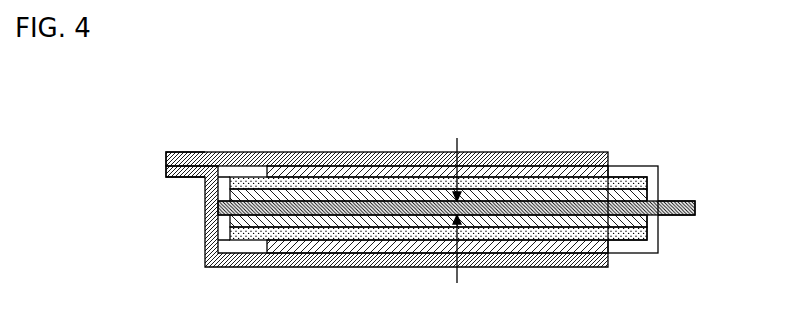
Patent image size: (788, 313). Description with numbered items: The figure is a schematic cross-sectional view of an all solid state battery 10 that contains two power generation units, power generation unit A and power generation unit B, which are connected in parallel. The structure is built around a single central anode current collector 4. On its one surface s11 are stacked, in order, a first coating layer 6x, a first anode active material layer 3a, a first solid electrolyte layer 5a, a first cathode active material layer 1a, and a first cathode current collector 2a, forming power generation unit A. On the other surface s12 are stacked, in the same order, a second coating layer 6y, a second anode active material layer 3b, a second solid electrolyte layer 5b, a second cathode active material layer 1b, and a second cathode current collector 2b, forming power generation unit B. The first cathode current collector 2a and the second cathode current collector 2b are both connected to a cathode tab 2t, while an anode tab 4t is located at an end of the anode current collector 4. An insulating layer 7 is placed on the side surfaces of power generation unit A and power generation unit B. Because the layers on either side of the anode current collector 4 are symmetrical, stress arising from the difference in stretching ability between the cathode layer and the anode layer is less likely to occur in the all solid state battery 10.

The all solid state battery 10 is at (615, 100).
The first cathode current collector 2a is at (364, 152).
The second cathode current collector 2b is at (372, 268).
The cathode tab 2t is at (176, 152).
The insulating layer 7 is at (242, 173).
The first cathode active material layer 1a is at (598, 173).
The first solid electrolyte layer 5a is at (630, 184).
The first anode active material layer 3a is at (635, 196).
The anode current collector 4 is at (513, 201).
The anode tab 4t is at (697, 209).
The second anode active material layer 3b is at (635, 219).
The second solid electrolyte layer 5b is at (632, 234).
The second cathode active material layer 1b is at (600, 247).
The first coating layer 6x is at (232, 200).
The second coating layer 6y is at (232, 216).
The one surface s11 is at (456, 159).
The other surface s12 is at (459, 258).
The power generation unit A is at (730, 145).
The power generation unit B is at (730, 227).